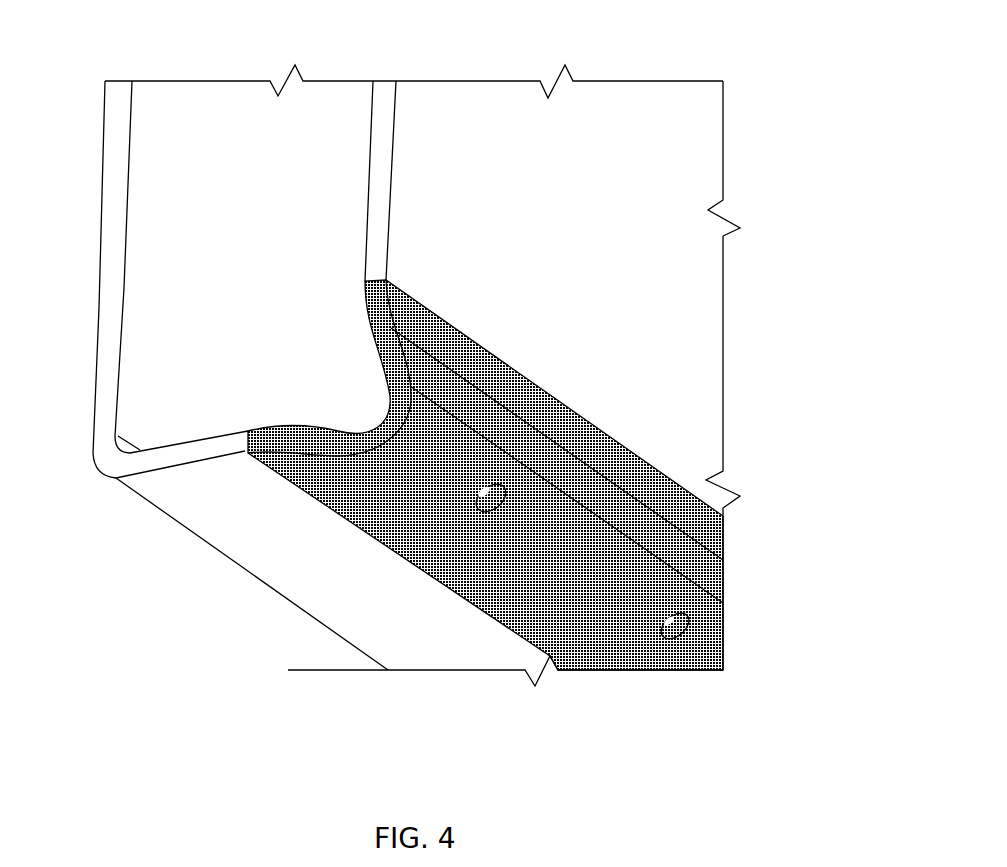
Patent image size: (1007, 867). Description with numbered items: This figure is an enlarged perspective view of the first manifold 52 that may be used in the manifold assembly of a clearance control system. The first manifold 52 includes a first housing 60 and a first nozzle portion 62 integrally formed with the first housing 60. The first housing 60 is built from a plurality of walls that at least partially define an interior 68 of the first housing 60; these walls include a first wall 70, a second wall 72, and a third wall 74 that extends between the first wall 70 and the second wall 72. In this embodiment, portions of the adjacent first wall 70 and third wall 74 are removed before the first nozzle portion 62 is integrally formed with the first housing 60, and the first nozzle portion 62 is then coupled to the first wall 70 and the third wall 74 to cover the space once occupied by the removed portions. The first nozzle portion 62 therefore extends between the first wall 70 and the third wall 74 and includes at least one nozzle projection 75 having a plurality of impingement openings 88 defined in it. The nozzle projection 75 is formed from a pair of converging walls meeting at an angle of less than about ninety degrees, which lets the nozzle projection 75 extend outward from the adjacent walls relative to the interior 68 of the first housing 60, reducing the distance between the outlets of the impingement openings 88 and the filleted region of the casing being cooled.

The first manifold 52 is at (712, 48).
The first housing 60 is at (740, 138).
The first nozzle portion 62 is at (483, 493).
The interior 68 is at (236, 234).
The first wall 70 is at (718, 284).
The second wall 72 is at (103, 241).
The third wall 74 is at (196, 440).
The nozzle projection 75 is at (597, 627).
The impingement openings 88 is at (468, 508).